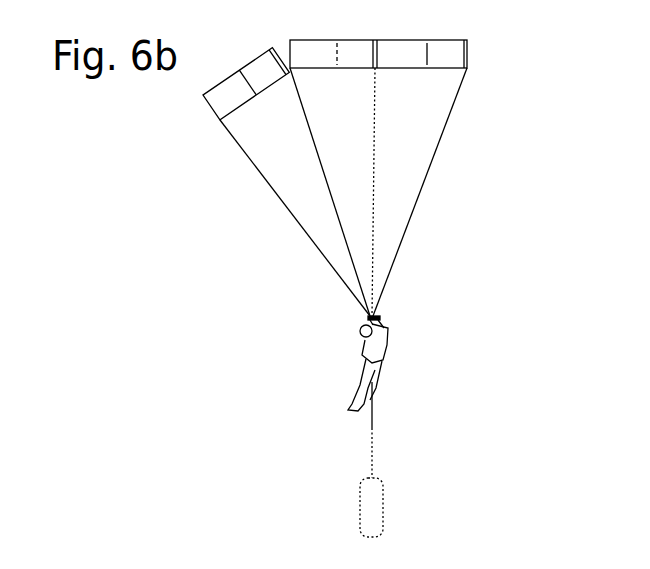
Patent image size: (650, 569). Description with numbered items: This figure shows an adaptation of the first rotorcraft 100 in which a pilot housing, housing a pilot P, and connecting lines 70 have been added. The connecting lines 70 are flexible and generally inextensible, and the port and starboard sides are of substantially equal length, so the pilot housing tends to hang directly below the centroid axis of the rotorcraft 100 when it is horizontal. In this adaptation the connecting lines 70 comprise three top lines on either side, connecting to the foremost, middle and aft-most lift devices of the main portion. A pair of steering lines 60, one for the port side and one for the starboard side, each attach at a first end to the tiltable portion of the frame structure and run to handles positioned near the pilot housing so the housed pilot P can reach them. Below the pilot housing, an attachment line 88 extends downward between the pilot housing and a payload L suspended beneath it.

The rotorcraft 100 is at (487, 53).
The connecting lines 70 is at (332, 192).
The steering lines 60 is at (280, 198).
The attachment line 88 is at (372, 428).
The pilot P is at (378, 363).
The payload L is at (381, 507).